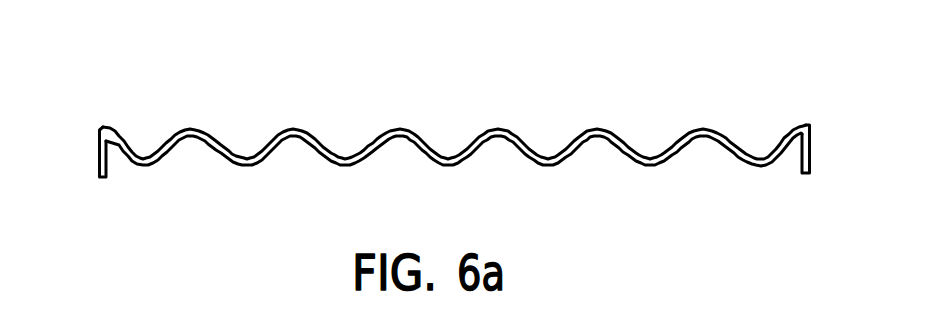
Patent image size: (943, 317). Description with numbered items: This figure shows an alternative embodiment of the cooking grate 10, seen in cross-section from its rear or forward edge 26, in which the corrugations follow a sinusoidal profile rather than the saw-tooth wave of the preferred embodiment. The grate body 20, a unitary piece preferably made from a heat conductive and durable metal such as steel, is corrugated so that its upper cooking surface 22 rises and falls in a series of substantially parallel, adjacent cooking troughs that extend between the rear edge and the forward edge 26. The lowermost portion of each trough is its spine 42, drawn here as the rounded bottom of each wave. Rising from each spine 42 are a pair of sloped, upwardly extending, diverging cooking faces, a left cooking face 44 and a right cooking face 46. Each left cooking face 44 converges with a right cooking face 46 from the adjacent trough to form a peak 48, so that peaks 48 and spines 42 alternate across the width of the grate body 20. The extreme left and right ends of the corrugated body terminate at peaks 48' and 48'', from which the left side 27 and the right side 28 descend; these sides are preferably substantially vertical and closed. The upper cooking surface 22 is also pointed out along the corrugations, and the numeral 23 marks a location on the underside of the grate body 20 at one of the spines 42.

The cooking grate 10 is at (477, 66).
The grate body 20 is at (168, 142).
The upper cooking surface 22 is at (632, 130).
The inner surface 23 is at (424, 174).
The forward edge 26 is at (749, 173).
The left side 27 is at (98, 160).
The right side 28 is at (812, 150).
The spine 42 is at (145, 168).
The left cooking face 44 is at (325, 148).
The right cooking face 46 is at (368, 147).
The peak 48 is at (456, 103).
The first end crest 48' is at (85, 104).
The second end crest 48'' is at (790, 102).